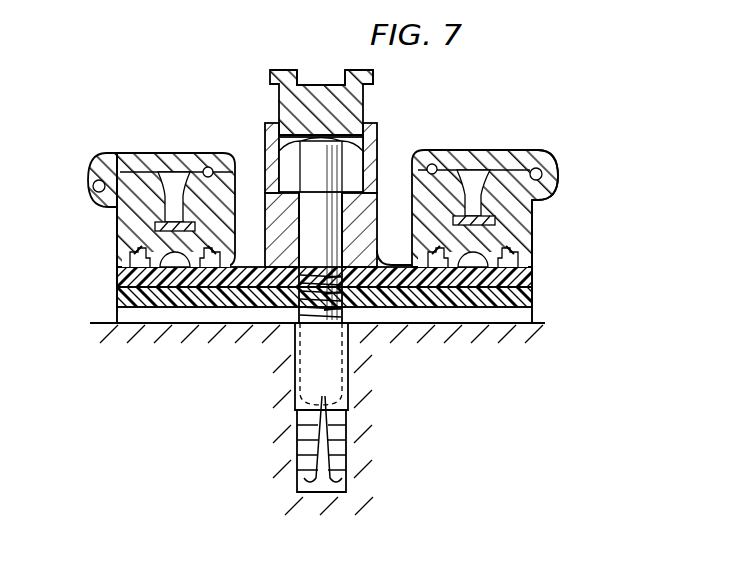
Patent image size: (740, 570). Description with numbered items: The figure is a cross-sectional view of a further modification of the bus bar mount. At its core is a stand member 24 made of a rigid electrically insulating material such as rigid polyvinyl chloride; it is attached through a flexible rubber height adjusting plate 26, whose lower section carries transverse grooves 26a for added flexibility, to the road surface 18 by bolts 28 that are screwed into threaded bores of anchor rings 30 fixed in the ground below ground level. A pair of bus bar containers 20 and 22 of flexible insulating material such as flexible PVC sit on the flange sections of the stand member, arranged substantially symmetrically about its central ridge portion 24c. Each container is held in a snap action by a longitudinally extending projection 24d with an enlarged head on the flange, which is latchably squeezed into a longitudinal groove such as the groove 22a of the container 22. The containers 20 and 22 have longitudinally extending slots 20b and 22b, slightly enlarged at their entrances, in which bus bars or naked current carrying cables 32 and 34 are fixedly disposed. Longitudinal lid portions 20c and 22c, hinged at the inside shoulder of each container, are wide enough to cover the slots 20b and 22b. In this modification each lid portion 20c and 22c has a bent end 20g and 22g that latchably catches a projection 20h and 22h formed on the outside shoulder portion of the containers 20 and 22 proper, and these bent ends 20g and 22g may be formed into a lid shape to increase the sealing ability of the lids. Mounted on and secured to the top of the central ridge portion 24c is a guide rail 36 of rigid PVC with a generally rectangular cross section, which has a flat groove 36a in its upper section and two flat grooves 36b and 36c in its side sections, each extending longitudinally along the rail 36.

The road surface 18 is at (100, 322).
The bus bar container 20 is at (530, 155).
The slot 20b is at (471, 183).
The lid portion 20c is at (487, 160).
The bent end 20g is at (545, 190).
The projection 20h is at (556, 170).
The bus bar container 22 is at (243, 232).
The groove 22a is at (126, 263).
The slot 22b is at (163, 215).
The lid portion 22c is at (175, 158).
The bent end 22g is at (96, 188).
The projection 22h is at (106, 170).
The stand member 24 is at (382, 268).
The central ridge portion 24c is at (259, 185).
The projection 24d is at (528, 255).
The height adjusting plate 26 is at (536, 292).
The grooves 26a is at (548, 316).
The bolt 28 is at (364, 155).
The anchor ring 30 is at (346, 388).
The bus bar 32 is at (520, 242).
The bus bar 34 is at (140, 252).
The guide rail 36 is at (348, 98).
The flat groove 36a is at (316, 85).
The flat groove 36b is at (366, 108).
The flat groove 36c is at (279, 100).